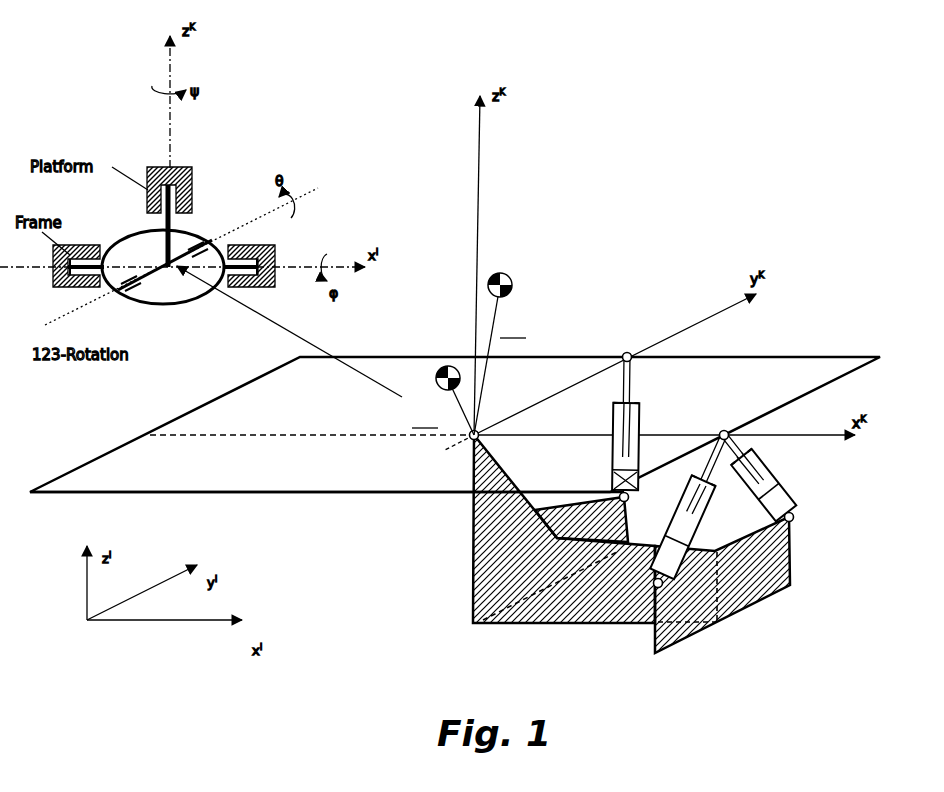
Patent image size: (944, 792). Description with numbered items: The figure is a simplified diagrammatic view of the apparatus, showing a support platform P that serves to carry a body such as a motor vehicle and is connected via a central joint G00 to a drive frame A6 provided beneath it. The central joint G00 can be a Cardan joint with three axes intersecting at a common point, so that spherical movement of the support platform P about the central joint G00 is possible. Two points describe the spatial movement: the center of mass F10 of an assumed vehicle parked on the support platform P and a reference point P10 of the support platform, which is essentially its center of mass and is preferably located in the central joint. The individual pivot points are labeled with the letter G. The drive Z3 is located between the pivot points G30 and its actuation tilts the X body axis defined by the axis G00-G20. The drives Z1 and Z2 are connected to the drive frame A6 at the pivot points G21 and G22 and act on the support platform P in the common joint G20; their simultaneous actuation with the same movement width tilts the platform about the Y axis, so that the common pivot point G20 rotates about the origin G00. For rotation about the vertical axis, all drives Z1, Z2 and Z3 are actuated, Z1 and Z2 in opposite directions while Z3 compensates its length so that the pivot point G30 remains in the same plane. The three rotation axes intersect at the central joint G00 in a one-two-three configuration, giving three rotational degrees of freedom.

The support platform P is at (293, 470).
The drive frame A6 is at (587, 612).
The first drive Z1 is at (688, 506).
The second drive Z2 is at (759, 477).
The third drive Z3 is at (625, 423).
The central joint G00 is at (494, 426).
The common pivot point G20 is at (700, 428).
The pivot point of drive Z1 G21 is at (674, 594).
The pivot point of drive Z2 G22 is at (806, 524).
The pivot points of drive Z3 G30 is at (631, 426).
The center of mass of the vehicle F10 is at (507, 351).
The reference point of the support platform P10 is at (433, 400).